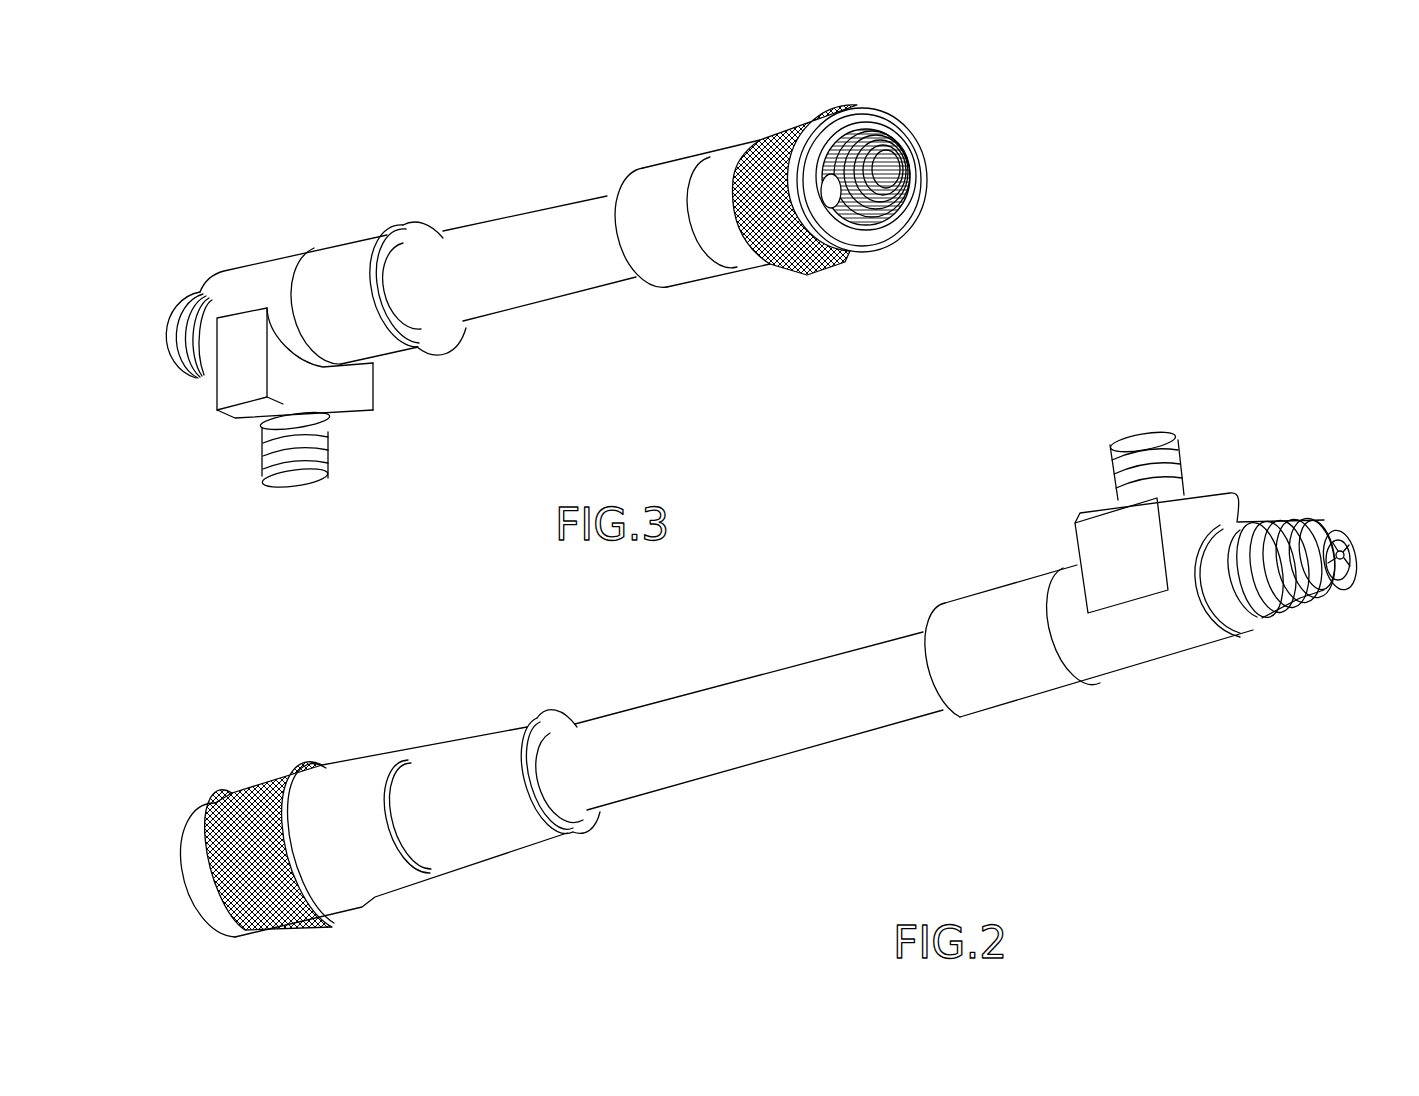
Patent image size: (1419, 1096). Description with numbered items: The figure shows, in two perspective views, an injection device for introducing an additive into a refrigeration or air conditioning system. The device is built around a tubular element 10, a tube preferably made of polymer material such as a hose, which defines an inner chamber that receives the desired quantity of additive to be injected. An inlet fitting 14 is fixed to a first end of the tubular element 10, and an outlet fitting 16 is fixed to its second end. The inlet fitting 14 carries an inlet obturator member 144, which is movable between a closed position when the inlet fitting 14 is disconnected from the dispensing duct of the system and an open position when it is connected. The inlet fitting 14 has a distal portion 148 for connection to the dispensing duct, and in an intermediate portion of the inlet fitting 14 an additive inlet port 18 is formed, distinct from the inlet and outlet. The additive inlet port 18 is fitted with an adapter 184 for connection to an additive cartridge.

In FIG. 3, the tubular element 10 is at (523, 303).
In FIG. 2, the tubular element 10 is at (760, 673).
In FIG. 3, the inlet fitting 14 is at (319, 222).
In FIG. 2, the inlet fitting 14 is at (1160, 690).
In FIG. 3, the outlet fitting 16 is at (942, 155).
In FIG. 2, the outlet fitting 16 is at (493, 884).
In FIG. 3, the additive inlet port 18 is at (220, 441).
In FIG. 2, the inlet obturator member 144 is at (1350, 540).
In FIG. 2, the distal portion 148 is at (1268, 514).
In FIG. 3, the adapter 184 is at (317, 481).
In FIG. 2, the adapter 184 is at (1155, 433).